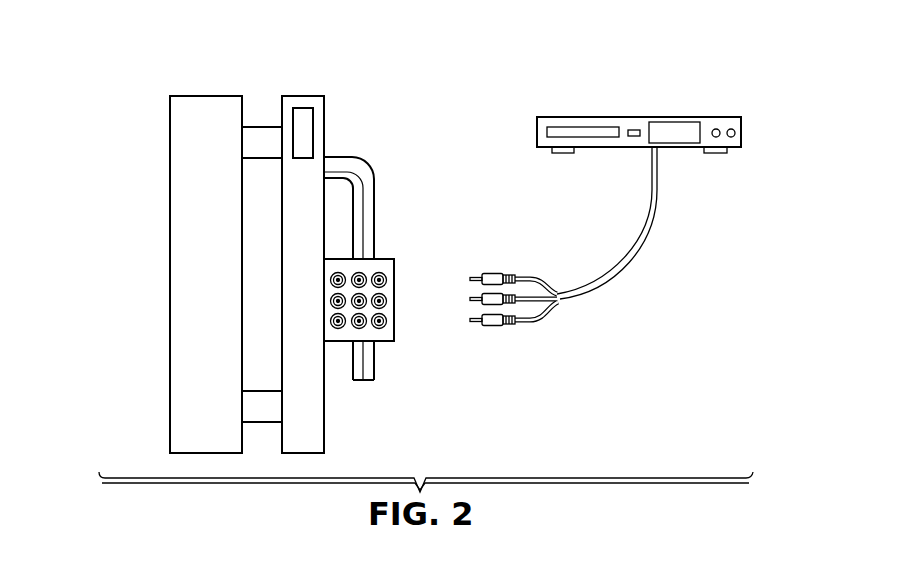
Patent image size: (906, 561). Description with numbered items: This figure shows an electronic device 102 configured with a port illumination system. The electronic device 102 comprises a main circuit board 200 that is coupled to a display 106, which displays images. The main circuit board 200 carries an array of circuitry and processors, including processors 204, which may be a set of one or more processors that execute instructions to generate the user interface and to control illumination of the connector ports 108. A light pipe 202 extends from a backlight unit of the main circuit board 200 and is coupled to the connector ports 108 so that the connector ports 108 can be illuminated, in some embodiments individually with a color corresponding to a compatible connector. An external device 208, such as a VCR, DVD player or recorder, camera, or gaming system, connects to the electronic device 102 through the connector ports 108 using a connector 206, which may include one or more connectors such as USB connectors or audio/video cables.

The electronic device 102 is at (118, 90).
The display 106 is at (170, 275).
The connector ports 108 is at (394, 332).
The main circuit board 200 is at (324, 400).
The light pipe 202 is at (375, 208).
The processors 204 is at (314, 133).
The connector 206 is at (494, 272).
The external device 208 is at (640, 117).